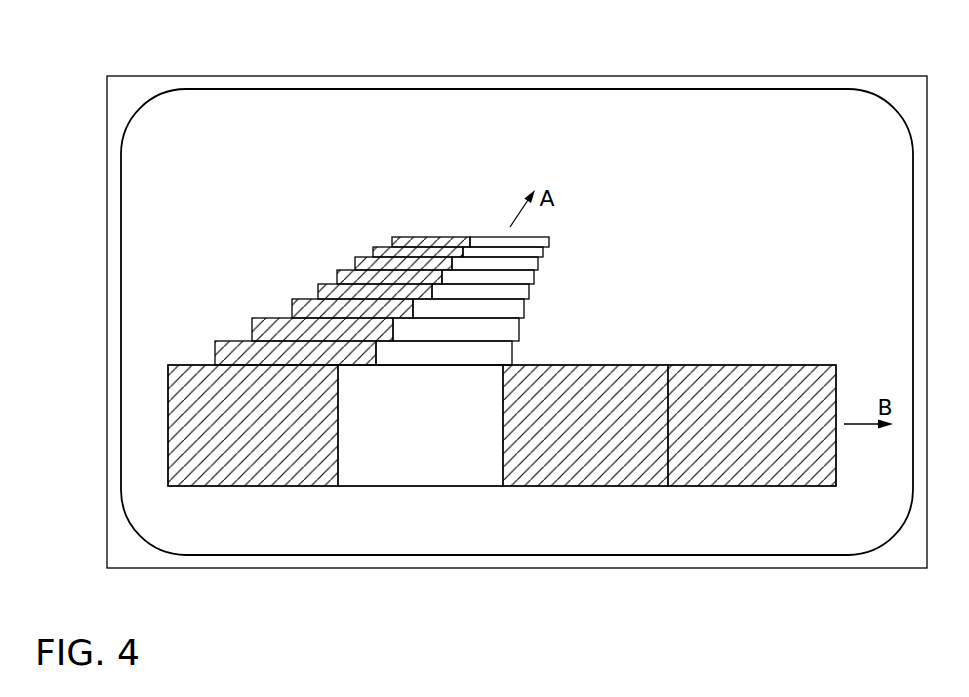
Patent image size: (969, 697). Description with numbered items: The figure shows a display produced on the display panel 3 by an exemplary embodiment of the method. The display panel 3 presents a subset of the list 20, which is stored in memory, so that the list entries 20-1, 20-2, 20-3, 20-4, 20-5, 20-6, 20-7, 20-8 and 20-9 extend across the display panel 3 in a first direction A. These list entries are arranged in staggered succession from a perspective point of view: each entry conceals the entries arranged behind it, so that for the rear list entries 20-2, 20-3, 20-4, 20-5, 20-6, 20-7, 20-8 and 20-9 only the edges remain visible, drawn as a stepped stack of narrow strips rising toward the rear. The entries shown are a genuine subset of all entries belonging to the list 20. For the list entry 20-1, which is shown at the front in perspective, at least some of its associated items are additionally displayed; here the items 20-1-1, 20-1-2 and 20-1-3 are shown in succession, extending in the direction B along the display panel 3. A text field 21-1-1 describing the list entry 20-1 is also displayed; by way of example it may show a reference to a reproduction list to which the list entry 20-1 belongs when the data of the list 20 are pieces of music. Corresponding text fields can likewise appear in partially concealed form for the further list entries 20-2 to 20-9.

The display panel 3 is at (788, 104).
The list 20 is at (434, 325).
The list entry 20-1 is at (434, 450).
The item 20-1-1 is at (252, 467).
The text field 21-1-1 is at (425, 469).
The item 20-1-2 is at (590, 468).
The item 20-1-3 is at (768, 466).
The list entry 20-2 is at (228, 353).
The list entry 20-3 is at (263, 328).
The list entry 20-4 is at (302, 309).
The list entry 20-5 is at (328, 292).
The list entry 20-6 is at (345, 279).
The list entry 20-7 is at (362, 265).
The list entry 20-8 is at (380, 252).
The list entry 20-9 is at (442, 240).